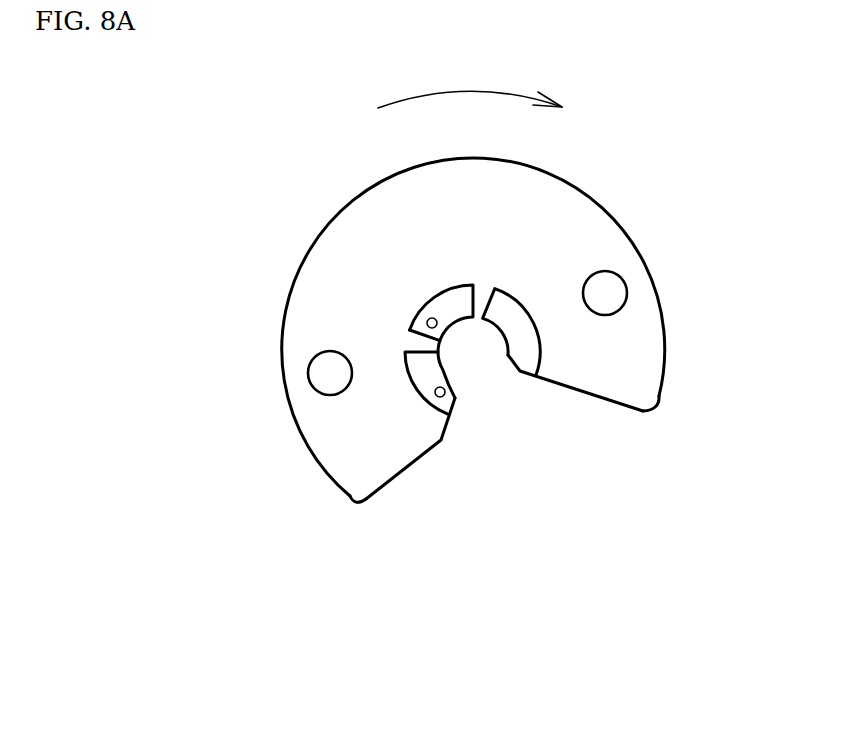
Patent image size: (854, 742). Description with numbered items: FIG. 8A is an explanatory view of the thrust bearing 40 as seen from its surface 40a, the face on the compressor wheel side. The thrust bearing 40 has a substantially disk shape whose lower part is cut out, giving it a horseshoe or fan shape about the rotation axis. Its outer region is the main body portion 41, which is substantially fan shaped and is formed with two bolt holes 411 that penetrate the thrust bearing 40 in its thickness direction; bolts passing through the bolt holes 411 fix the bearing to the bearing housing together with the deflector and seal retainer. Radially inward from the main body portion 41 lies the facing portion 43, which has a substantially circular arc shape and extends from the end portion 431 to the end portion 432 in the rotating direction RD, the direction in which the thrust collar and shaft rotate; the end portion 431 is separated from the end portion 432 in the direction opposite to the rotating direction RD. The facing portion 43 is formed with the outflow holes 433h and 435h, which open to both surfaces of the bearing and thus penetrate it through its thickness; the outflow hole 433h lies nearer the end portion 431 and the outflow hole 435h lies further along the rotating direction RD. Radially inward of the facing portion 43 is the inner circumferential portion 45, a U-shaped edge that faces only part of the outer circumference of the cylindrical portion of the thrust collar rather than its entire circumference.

The thrust bearing 40 is at (615, 220).
The surface 40a is at (340, 248).
The main body portion 41 is at (382, 210).
The bolt hole 411 is at (312, 377).
The facing portion 43 is at (500, 283).
The end portion 431 is at (430, 448).
The end portion 432 is at (528, 375).
The outflow hole 433h is at (435, 393).
The outflow hole 435h is at (427, 321).
The inner circumferential portion 45 is at (445, 377).
The rotating direction RD is at (488, 90).